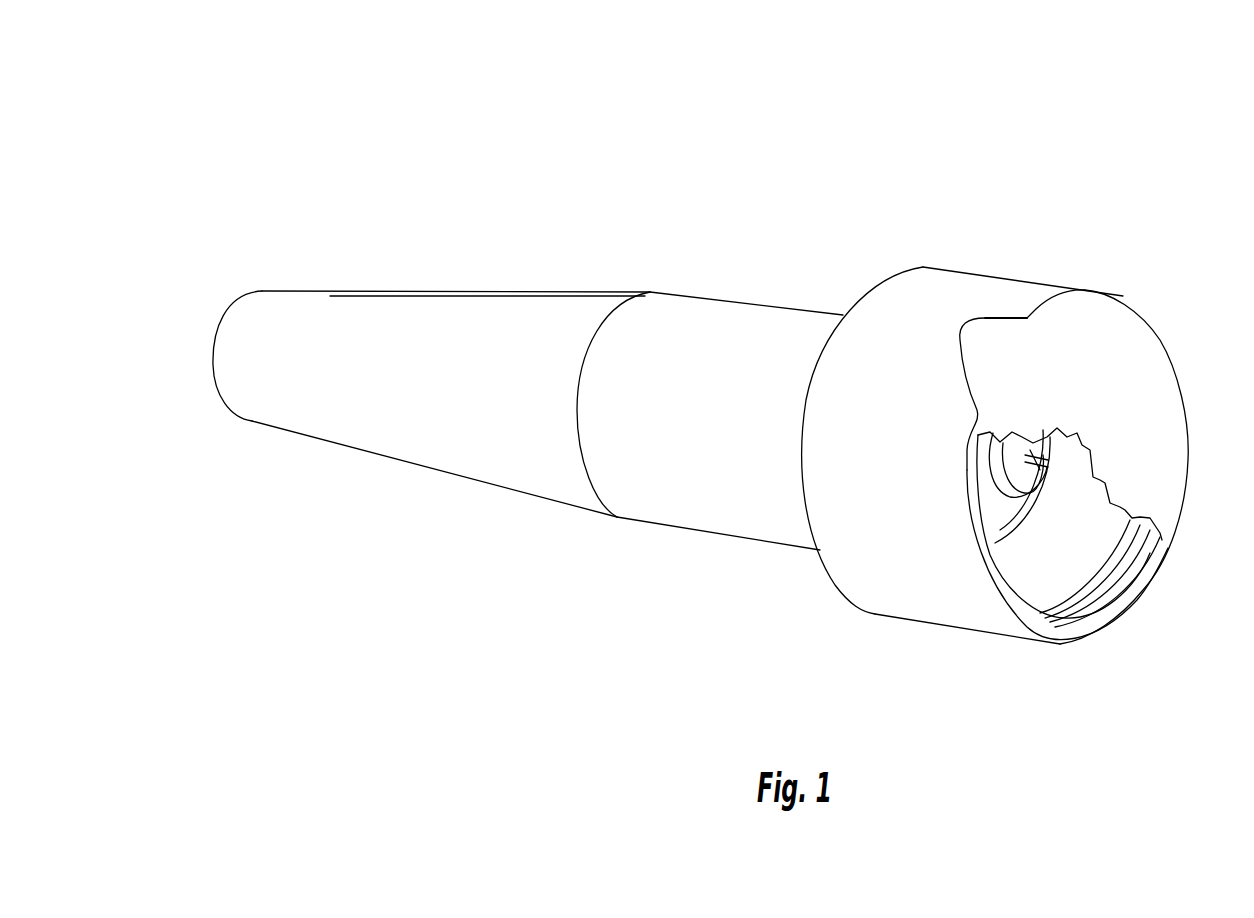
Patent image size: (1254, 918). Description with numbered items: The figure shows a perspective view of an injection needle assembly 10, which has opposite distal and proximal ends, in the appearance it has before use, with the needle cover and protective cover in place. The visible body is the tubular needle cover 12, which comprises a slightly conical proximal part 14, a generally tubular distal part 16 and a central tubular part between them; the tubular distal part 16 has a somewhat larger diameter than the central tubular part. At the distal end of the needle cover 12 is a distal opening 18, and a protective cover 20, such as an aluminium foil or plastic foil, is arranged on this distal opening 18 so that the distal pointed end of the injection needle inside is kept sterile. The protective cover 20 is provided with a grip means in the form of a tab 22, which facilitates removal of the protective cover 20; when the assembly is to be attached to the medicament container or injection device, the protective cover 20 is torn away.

The needle assembly 10 is at (700, 398).
The needle cover 12 is at (697, 293).
The conical proximal part 14 is at (465, 413).
The tubular distal part 16 is at (882, 480).
The distal opening 18 is at (1110, 544).
The protective cover 20 is at (1115, 397).
The tab 22 is at (985, 318).